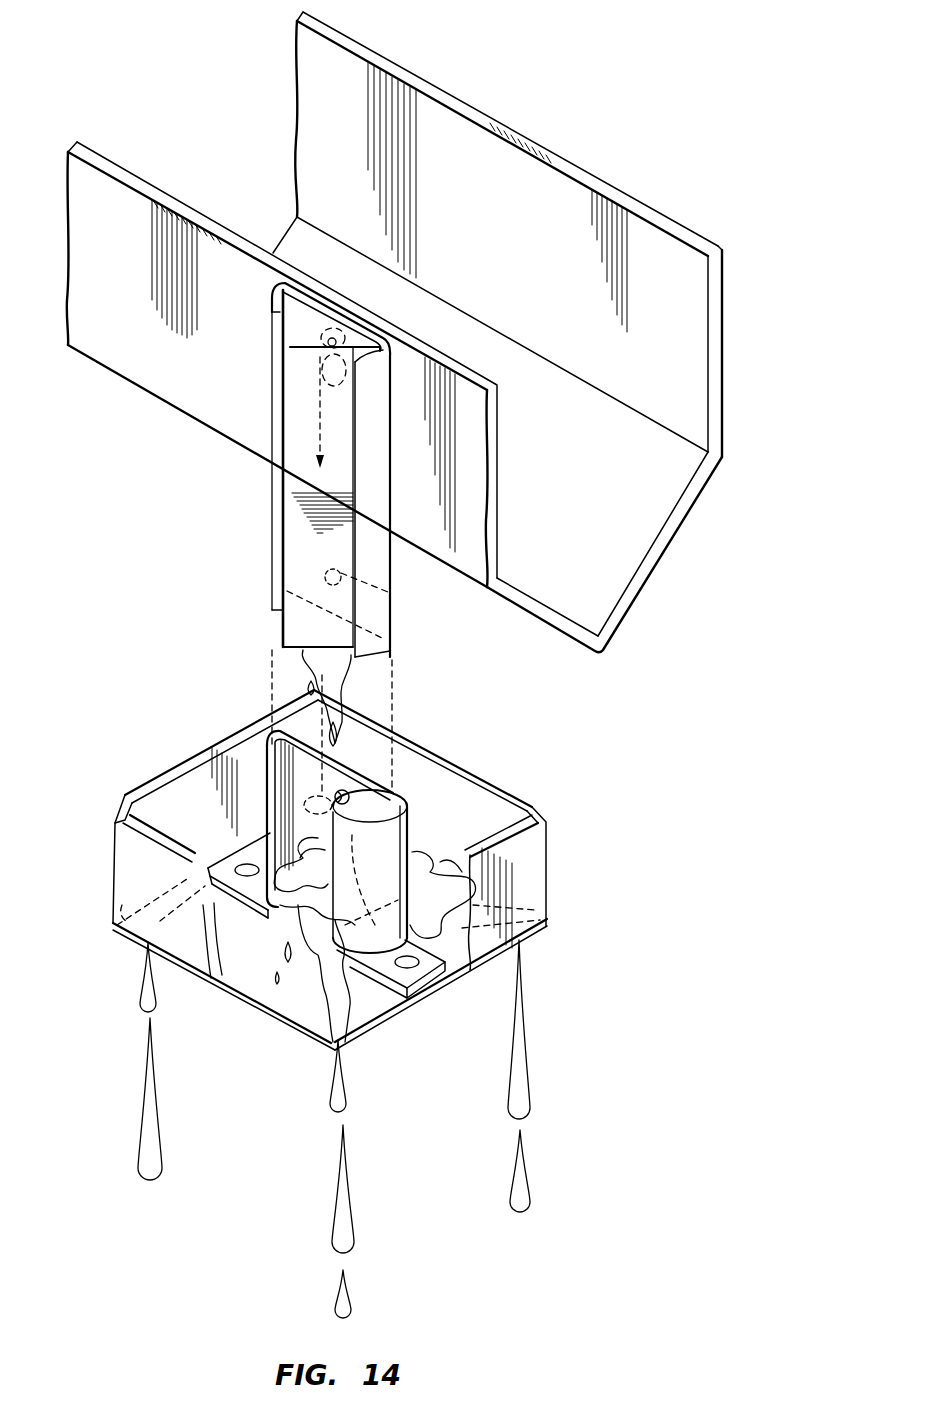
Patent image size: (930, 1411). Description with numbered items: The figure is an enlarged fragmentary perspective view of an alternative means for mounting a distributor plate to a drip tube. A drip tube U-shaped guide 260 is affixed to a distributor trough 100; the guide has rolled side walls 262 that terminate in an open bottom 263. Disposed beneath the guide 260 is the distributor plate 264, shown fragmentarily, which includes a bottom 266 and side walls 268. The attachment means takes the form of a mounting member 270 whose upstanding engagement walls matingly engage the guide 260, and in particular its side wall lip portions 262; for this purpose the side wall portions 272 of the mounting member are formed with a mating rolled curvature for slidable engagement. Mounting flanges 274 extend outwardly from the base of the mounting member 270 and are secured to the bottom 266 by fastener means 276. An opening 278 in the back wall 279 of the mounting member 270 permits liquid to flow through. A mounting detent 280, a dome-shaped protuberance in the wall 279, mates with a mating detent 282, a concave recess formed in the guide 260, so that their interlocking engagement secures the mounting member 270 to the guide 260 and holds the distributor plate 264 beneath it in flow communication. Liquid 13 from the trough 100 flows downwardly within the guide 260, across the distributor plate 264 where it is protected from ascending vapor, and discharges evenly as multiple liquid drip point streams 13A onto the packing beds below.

The distributor trough 100 is at (243, 321).
The drip tube U-shaped guide 260 is at (313, 539).
The rolled side walls 262 is at (380, 523).
The open bottom 263 is at (273, 617).
The mating detent 282 is at (343, 580).
The liquid 13 is at (350, 667).
The liquid drip point streams 13A is at (152, 1062).
The distributor plate 264 is at (337, 870).
The bottom 266 is at (458, 963).
The side walls 268 is at (528, 873).
The mounting member 270 is at (307, 880).
The side wall portions 272 is at (268, 798).
The mounting flanges 274 is at (204, 870).
The fastener means 276 is at (245, 866).
The opening 278 is at (330, 838).
The back wall 279 is at (372, 793).
The mounting detent 280 is at (345, 790).